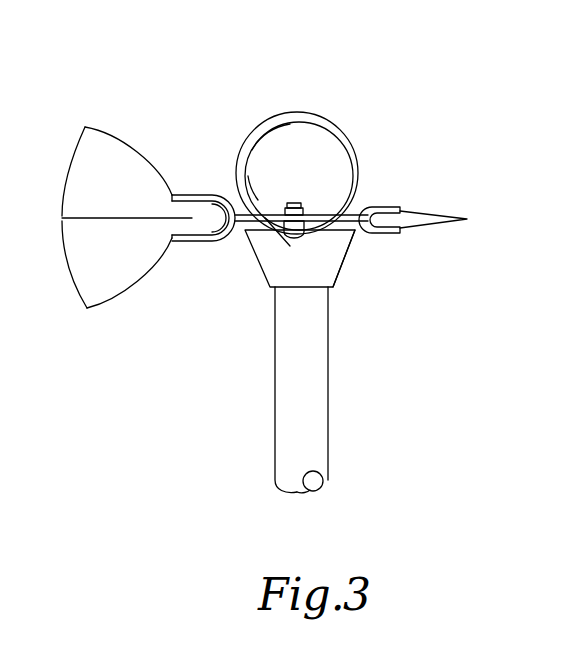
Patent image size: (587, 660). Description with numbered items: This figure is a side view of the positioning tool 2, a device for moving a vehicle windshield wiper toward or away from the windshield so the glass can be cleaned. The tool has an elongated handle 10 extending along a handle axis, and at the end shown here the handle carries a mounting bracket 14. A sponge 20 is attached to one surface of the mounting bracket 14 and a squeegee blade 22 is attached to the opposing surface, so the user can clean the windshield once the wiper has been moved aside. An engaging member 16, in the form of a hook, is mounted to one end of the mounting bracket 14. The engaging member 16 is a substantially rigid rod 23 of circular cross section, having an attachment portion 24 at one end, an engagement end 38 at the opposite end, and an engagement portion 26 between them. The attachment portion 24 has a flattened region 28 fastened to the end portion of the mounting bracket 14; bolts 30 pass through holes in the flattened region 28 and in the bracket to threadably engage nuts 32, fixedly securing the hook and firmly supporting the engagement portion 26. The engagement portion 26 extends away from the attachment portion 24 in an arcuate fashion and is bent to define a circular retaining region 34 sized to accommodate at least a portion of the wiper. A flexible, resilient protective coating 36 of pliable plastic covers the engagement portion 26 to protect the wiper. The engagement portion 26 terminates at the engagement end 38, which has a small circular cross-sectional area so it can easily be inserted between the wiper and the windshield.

The positioning tool 2 is at (210, 386).
The handle 10 is at (321, 389).
The mounting bracket 14 is at (360, 203).
The engaging member 16 is at (318, 131).
The sponge 20 is at (100, 128).
The squeegee blade 22 is at (448, 212).
The rod 23 is at (300, 240).
The attachment portion 24 is at (289, 228).
The engagement portion 26 is at (258, 126).
The flattened region 28 is at (292, 240).
The bolts 30 is at (297, 238).
The nuts 32 is at (305, 222).
The retaining region 34 is at (287, 144).
The protective coating 36 is at (359, 160).
The engagement end 38 is at (245, 235).